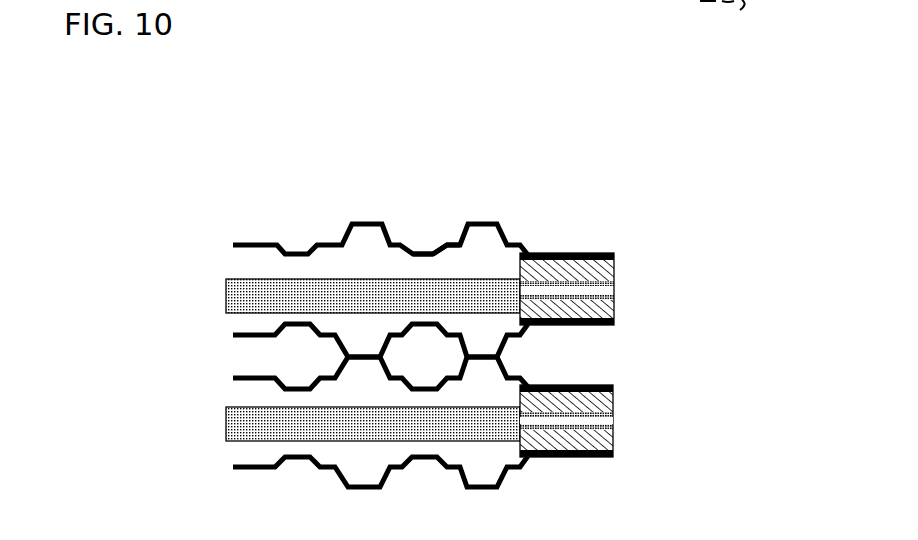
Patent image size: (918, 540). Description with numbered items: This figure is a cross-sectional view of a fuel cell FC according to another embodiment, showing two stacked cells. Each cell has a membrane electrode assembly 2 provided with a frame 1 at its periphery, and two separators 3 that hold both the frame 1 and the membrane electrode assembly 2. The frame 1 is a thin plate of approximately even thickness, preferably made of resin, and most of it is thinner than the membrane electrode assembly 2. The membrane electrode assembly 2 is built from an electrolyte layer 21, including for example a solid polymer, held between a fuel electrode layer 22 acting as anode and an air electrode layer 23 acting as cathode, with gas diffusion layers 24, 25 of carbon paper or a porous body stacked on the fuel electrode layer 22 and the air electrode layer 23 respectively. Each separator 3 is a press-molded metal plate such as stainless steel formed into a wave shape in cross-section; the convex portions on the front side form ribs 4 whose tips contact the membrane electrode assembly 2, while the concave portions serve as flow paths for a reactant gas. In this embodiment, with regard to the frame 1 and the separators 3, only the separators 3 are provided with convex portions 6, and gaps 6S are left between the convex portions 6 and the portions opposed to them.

The fuel cell FC is at (266, 210).
The frame 1 is at (238, 295).
The membrane electrode assembly 2 is at (722, 313).
The separator 3 is at (242, 243).
The rib 4 is at (526, 253).
The convex portion 6 is at (446, 244).
The gap 6S is at (420, 266).
The electrolyte layer 21 is at (613, 420).
The fuel electrode layer 22 is at (613, 412).
The air electrode layer 23 is at (613, 428).
The gas diffusion layer 24 is at (613, 388).
The gas diffusion layer 25 is at (613, 452).